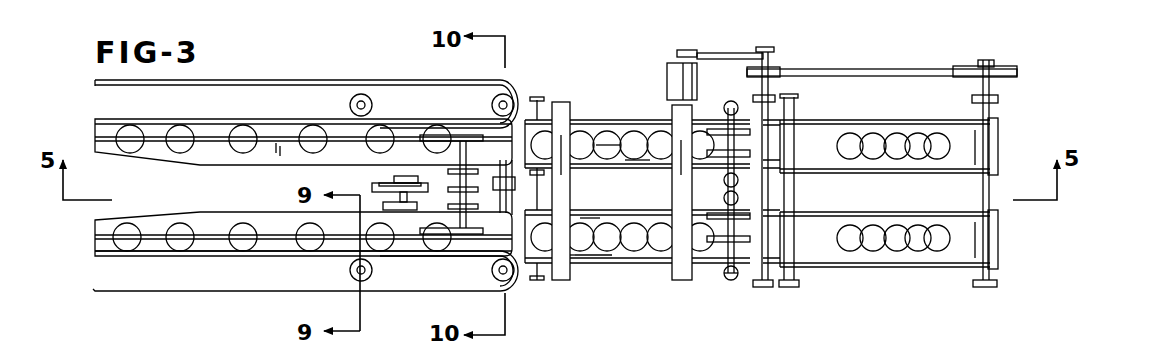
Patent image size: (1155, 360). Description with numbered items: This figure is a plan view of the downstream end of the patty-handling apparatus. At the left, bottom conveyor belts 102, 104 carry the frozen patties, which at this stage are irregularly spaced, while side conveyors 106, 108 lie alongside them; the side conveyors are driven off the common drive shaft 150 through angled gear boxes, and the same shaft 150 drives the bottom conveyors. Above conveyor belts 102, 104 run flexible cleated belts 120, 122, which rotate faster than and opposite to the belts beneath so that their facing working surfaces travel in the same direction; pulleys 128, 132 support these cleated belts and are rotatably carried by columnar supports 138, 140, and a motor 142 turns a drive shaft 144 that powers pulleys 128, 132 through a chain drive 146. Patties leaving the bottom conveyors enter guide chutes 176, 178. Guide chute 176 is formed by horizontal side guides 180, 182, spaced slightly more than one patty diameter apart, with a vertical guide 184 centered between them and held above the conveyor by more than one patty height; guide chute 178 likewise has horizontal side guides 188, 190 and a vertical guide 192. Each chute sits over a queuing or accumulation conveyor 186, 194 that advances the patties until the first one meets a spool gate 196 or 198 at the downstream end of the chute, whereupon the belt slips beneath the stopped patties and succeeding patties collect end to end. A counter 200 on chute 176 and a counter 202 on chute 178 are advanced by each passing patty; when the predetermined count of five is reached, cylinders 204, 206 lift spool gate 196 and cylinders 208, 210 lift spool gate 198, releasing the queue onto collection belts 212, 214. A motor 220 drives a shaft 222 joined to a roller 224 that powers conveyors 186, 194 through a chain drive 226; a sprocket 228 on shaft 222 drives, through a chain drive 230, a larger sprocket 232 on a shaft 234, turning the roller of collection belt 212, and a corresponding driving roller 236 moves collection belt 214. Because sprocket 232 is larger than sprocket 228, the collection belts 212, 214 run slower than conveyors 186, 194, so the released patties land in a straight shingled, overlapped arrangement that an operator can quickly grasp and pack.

The bottom conveyor belt 102 is at (217, 152).
The bottom conveyor belt 104 is at (215, 227).
The side conveyor 106 is at (272, 120).
The side conveyor 108 is at (273, 258).
The cleated belt 120 is at (290, 138).
The cleated belt 122 is at (340, 236).
The pulley 128 is at (474, 240).
The pulley 132 is at (472, 134).
The columnar support 138 is at (460, 207).
The columnar support 140 is at (472, 170).
The motor 142 is at (404, 210).
The drive shaft 144 is at (470, 163).
The chain drive 146 is at (431, 183).
The common drive shaft 150 is at (515, 176).
The guide chute 176 is at (598, 115).
The guide chute 178 is at (590, 268).
The horizontal side guide 180 is at (600, 133).
The horizontal side guide 182 is at (638, 160).
The vertical guide 184 is at (612, 142).
The queuing or accumulation conveyor 186 is at (771, 118).
The horizontal side guide 188 is at (613, 220).
The horizontal side guide 190 is at (596, 266).
The vertical guide 192 is at (638, 238).
The queuing or accumulation conveyor 194 is at (758, 260).
The spool gate 196 is at (773, 135).
The spool gate 198 is at (757, 240).
The counter 200 is at (581, 143).
The counter 202 is at (582, 258).
The cylinder 204 is at (740, 104).
The cylinder 206 is at (770, 197).
The cylinder 208 is at (750, 197).
The cylinder 210 is at (733, 282).
The collection belt 212 is at (993, 128).
The collection belt 214 is at (1000, 233).
The motor 220 is at (673, 68).
The shaft 222 is at (772, 57).
The roller 224 is at (778, 174).
The chain drive 226 is at (727, 53).
The sprocket 228 is at (777, 68).
The chain drive 230 is at (902, 69).
The sprocket 232 is at (1003, 66).
The shaft 234 is at (990, 88).
The driving roller 236 is at (992, 280).